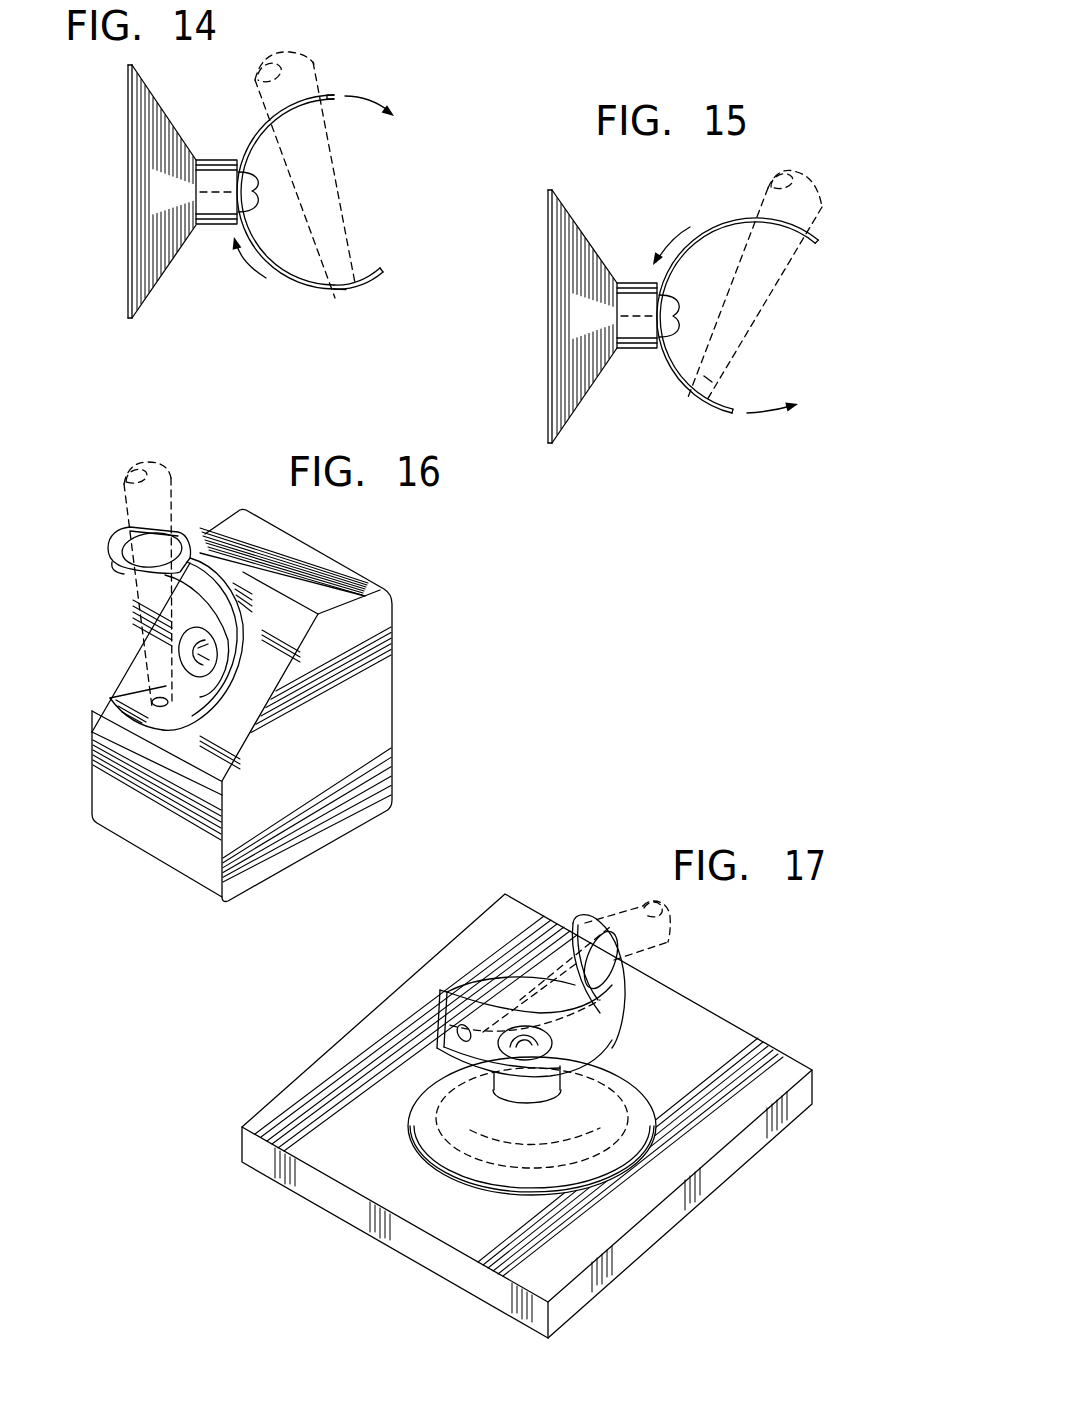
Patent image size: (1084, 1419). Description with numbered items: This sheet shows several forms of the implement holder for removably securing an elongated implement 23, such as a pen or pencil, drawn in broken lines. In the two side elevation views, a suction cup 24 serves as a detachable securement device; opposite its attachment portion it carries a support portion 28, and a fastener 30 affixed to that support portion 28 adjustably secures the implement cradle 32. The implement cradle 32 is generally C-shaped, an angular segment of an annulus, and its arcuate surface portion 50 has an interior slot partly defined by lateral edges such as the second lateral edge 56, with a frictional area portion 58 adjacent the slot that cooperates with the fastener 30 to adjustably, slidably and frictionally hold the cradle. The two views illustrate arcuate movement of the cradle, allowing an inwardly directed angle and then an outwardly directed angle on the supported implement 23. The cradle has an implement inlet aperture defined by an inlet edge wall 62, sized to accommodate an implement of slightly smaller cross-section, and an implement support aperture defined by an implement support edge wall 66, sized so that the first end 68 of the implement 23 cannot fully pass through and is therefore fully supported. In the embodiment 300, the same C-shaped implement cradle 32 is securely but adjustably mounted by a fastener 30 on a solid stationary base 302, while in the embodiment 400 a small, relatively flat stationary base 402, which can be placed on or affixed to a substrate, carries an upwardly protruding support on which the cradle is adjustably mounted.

In FIG. 14, the elongated implement 23 is at (336, 150).
In FIG. 15, the elongated implement 23 is at (783, 286).
In FIG. 16, the elongated implement 23 is at (171, 498).
In FIG. 17, the elongated implement 23 is at (631, 910).
In FIG. 14, the suction cup 24 is at (150, 293).
In FIG. 15, the suction cup 24 is at (570, 420).
In FIG. 14, the support portion 28 is at (213, 227).
In FIG. 15, the support portion 28 is at (648, 350).
In FIG. 17, the support portion 28 is at (515, 1176).
In FIG. 14, the fastener 30 is at (254, 207).
In FIG. 15, the fastener 30 is at (673, 298).
In FIG. 16, the fastener 30 is at (204, 663).
In FIG. 17, the fastener 30 is at (515, 1050).
In FIG. 16, the implement cradle 32 is at (111, 562).
In FIG. 17, the implement cradle 32 is at (581, 922).
In FIG. 14, the arcuate surface portion 50 is at (263, 247).
In FIG. 15, the arcuate surface portion 50 is at (713, 231).
In FIG. 16, the second lateral edge 56 is at (249, 607).
In FIG. 17, the second lateral edge 56 is at (594, 1042).
In FIG. 16, the frictional area portion 58 is at (227, 629).
In FIG. 17, the frictional area portion 58 is at (556, 1060).
In FIG. 14, the inlet edge wall 62 is at (322, 93).
In FIG. 15, the inlet edge wall 62 is at (748, 221).
In FIG. 16, the inlet edge wall 62 is at (135, 530).
In FIG. 17, the inlet edge wall 62 is at (627, 960).
In FIG. 14, the implement support edge wall 66 is at (355, 287).
In FIG. 15, the implement support edge wall 66 is at (708, 374).
In FIG. 17, the implement support edge wall 66 is at (457, 1037).
In FIG. 14, the first end 68 is at (338, 291).
In FIG. 15, the first end 68 is at (690, 406).
In FIG. 16, the first end 68 is at (168, 713).
In FIG. 16, the embodiment 300 is at (277, 705).
In FIG. 16, the stationary base 302 is at (391, 707).
In FIG. 17, the embodiment 400 is at (539, 1116).
In FIG. 17, the stationary base 402 is at (620, 1212).